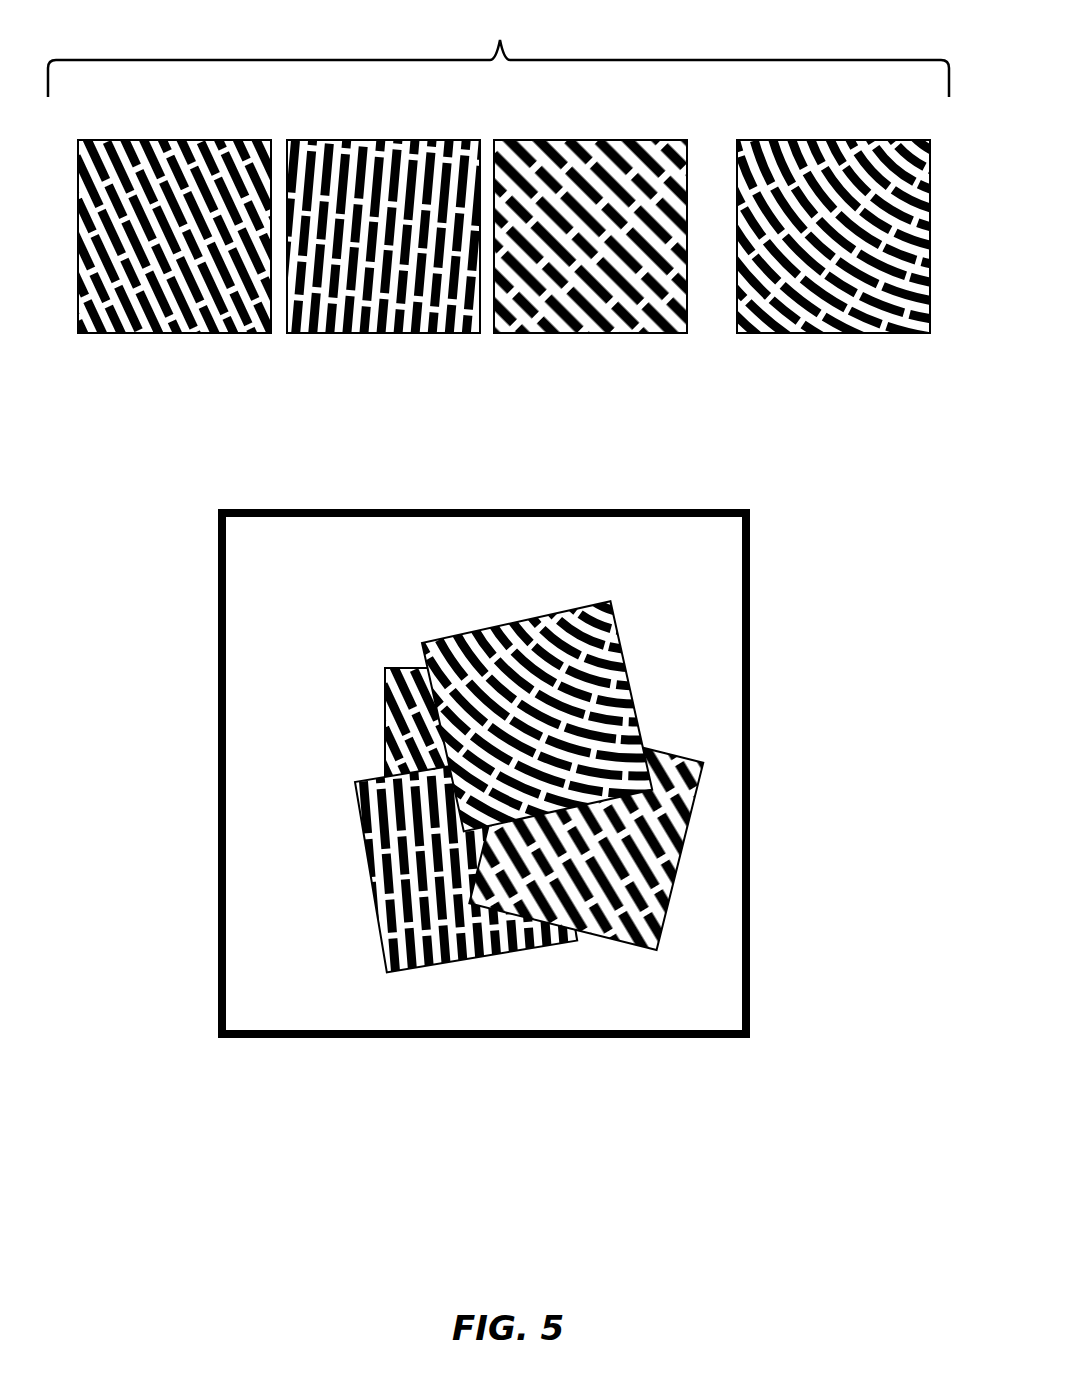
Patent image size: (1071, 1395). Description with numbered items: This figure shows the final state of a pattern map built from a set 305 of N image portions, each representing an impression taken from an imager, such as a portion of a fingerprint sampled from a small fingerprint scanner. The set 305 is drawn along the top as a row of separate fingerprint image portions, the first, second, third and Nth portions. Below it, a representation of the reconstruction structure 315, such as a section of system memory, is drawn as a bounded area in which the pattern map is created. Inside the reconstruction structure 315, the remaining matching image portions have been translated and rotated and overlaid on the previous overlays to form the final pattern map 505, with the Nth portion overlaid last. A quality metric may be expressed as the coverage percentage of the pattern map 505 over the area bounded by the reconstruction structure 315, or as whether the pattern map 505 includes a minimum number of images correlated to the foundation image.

The set of image portions 305 is at (498, 53).
The reconstruction structure 315 is at (753, 556).
The final pattern map 505 is at (328, 568).